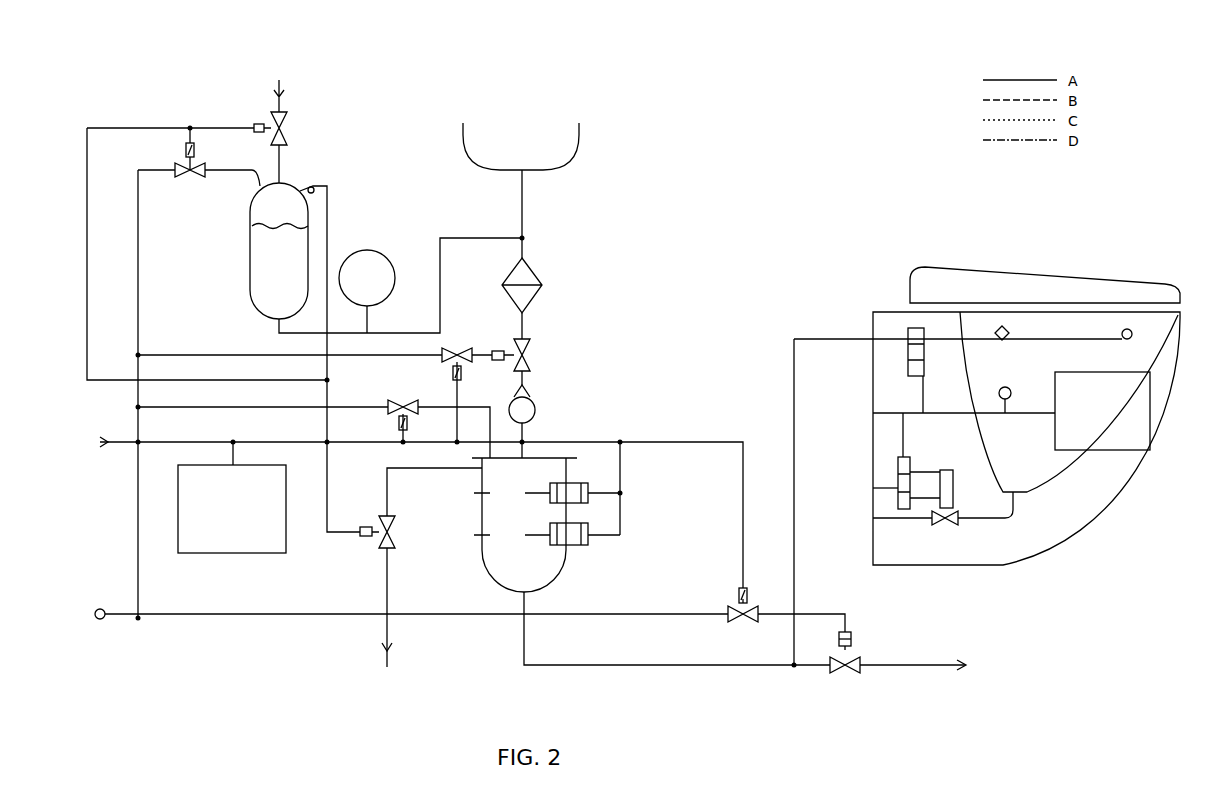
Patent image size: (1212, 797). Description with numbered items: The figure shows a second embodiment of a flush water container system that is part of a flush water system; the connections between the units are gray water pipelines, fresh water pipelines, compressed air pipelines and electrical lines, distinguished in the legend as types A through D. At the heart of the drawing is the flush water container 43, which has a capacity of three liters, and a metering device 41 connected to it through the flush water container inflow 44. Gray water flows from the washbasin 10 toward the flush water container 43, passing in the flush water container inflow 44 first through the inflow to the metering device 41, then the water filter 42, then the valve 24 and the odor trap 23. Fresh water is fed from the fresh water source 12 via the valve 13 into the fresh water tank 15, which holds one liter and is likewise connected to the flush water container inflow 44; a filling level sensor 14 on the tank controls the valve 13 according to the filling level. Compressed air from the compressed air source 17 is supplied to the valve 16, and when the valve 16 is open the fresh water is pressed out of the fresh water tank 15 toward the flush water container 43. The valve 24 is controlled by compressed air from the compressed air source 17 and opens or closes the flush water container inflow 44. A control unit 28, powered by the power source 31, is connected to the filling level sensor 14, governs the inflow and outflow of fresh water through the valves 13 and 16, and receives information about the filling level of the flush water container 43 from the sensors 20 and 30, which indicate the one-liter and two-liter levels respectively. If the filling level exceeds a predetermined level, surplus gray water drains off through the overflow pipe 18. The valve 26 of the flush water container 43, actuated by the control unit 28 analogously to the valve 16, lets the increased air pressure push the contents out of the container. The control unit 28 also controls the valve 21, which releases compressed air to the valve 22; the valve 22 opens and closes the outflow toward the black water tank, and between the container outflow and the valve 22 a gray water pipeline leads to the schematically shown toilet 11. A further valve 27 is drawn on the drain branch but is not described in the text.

The washbasin 10 is at (575, 147).
The toilet 11 is at (1003, 565).
The fresh water source 12 is at (277, 83).
The valve 13 is at (292, 128).
The filling level sensor 14 is at (290, 205).
The fresh water tank 15 is at (252, 242).
The valve 16 is at (192, 160).
The compressed air source 17 is at (78, 619).
The overflow pipe 18 is at (386, 671).
The sensor 20 is at (572, 548).
The valve 21 is at (738, 602).
The valve 22 is at (848, 673).
The odor trap 23 is at (537, 402).
The valve 24 is at (535, 362).
The valve 26 is at (403, 400).
The drain valve 27 is at (392, 538).
The control unit 28 is at (230, 553).
The sensor 30 is at (583, 467).
The power source 31 is at (81, 442).
The metering device 41 is at (379, 249).
The water filter 42 is at (537, 275).
The flush water container 43 is at (550, 457).
The flush water container inflow 44 is at (527, 432).